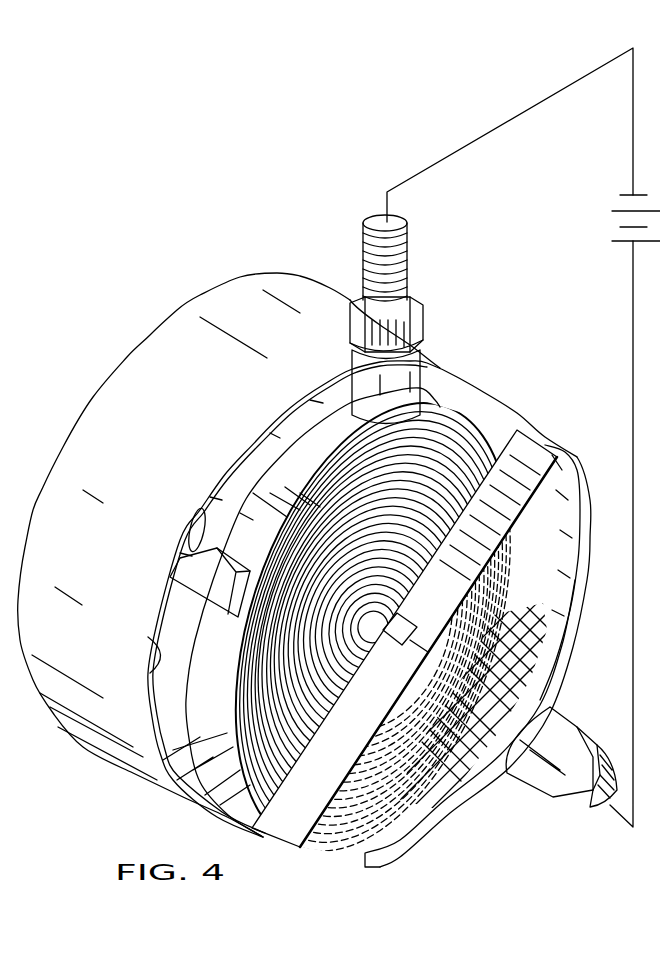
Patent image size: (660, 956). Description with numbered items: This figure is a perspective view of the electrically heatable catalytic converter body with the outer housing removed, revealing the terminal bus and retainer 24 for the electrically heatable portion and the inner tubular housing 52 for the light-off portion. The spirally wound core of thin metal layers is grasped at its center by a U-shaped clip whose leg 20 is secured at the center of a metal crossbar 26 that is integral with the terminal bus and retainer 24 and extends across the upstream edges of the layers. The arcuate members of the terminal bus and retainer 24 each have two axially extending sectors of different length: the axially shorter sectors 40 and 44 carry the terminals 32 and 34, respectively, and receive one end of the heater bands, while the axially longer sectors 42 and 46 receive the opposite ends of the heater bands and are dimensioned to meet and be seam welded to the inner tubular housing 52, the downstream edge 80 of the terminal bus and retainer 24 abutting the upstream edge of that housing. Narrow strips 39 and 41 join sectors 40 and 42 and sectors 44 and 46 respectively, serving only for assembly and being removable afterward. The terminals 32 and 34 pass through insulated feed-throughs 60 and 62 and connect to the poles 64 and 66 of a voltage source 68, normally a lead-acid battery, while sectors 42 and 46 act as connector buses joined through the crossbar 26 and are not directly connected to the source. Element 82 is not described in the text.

The leg of U-shaped clip 20 is at (407, 613).
The terminal bus and retainer 24 is at (577, 452).
The metal crossbar 26 is at (330, 790).
The terminal 32 is at (400, 266).
The terminal 34 is at (597, 800).
The narrow strip 39 is at (252, 590).
The axially shorter sector 40 is at (327, 476).
The narrow strip 41 is at (548, 665).
The axially longer sector 42 is at (193, 688).
The axially shorter sector 44 is at (452, 800).
The axially longer sector 46 is at (578, 545).
The inner tubular housing 52 is at (130, 367).
The insulated feed-through 60 is at (432, 348).
The insulated feed-through 62 is at (555, 712).
The pole of voltage source 64 is at (633, 192).
The pole of voltage source 66 is at (622, 243).
The voltage source 68 is at (600, 227).
The downstream edge 80 is at (148, 675).
The bump 82 is at (182, 548).